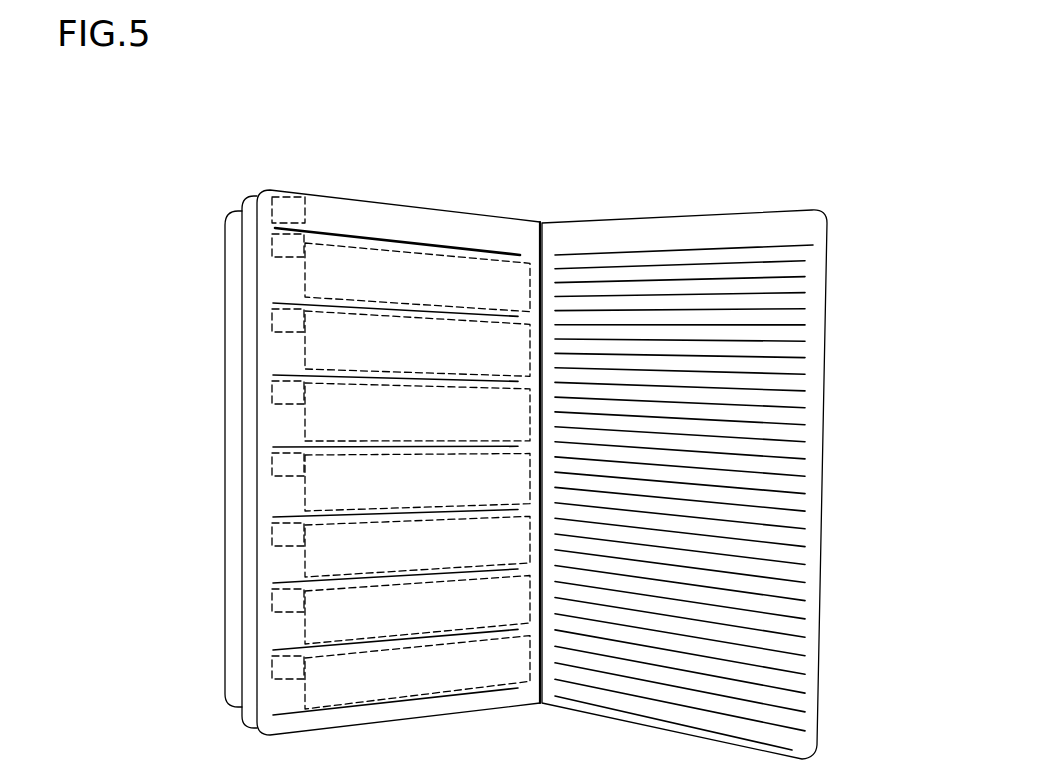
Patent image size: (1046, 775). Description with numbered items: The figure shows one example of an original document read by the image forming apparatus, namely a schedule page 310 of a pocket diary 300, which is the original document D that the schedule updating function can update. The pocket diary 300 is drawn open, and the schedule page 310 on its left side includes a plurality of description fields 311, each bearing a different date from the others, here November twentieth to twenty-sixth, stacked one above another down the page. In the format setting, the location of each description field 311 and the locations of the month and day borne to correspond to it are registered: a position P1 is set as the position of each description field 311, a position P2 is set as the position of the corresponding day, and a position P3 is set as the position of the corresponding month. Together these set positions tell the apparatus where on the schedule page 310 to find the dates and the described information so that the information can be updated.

The pocket diary 300 is at (778, 198).
The schedule page 310 is at (462, 236).
The description fields 311 is at (318, 270).
The position of each description field P1 is at (305, 285).
The position of a date (a day) P2 is at (272, 245).
The position of the date (a month) P3 is at (285, 196).